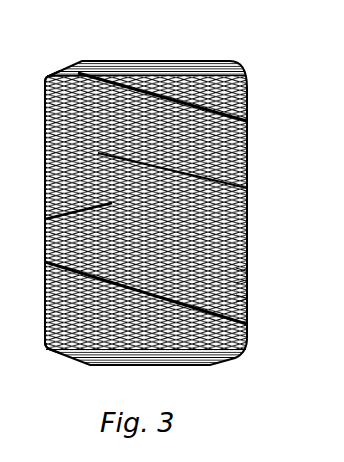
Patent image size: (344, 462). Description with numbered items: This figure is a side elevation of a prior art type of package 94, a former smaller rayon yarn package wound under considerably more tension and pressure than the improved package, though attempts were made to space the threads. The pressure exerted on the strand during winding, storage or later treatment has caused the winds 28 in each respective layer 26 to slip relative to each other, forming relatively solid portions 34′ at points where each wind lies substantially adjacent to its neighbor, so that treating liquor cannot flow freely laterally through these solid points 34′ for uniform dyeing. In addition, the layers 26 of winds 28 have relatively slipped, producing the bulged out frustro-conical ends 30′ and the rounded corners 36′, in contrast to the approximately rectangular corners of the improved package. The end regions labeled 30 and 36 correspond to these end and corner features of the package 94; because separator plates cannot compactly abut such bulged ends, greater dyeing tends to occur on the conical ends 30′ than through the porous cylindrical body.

The layer 26 is at (246, 298).
The winds 28 is at (246, 279).
The top end face of spool 30 is at (208, 68).
The bulged out frustro-conical ends 30′ is at (211, 365).
The relatively solid portions 34′ is at (247, 120).
The rounded top edge 36 is at (47, 78).
The rounded corners 36′ is at (43, 344).
The prior art type of package 94 is at (248, 197).